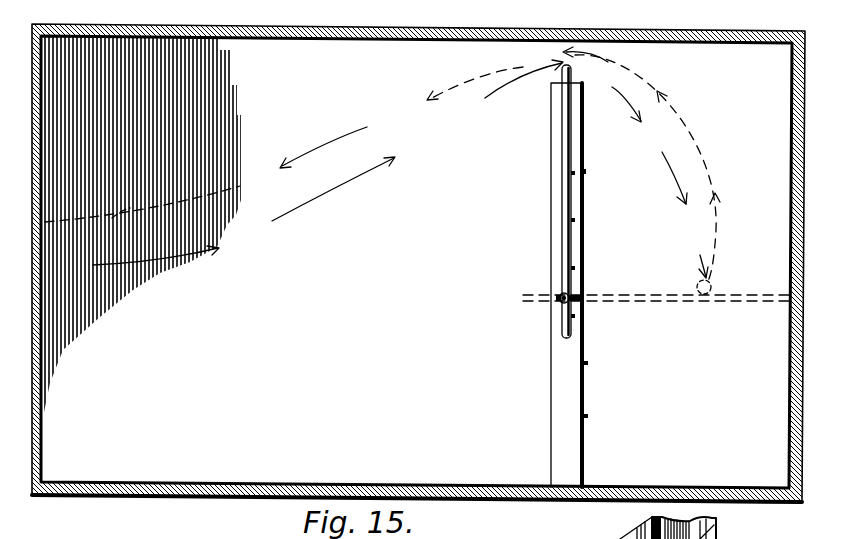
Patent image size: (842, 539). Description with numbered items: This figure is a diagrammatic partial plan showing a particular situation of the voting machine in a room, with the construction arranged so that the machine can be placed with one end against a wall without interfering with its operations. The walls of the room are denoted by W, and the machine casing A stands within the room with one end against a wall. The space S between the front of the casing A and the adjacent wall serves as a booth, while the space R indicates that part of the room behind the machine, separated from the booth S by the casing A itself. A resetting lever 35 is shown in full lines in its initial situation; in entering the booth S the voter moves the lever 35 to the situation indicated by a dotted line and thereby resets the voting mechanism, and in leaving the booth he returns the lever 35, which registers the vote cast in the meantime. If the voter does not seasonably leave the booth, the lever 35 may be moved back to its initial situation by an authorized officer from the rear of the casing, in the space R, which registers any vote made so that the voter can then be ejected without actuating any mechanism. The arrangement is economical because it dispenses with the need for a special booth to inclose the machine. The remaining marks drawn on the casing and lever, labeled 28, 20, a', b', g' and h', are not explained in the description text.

The walls of a room W is at (418, 263).
The part of the room behind the machine R is at (202, 227).
The guide channel 28 is at (550, 127).
The machine casing A is at (594, 285).
The resetting lever 35 is at (575, 147).
The slat 20 is at (584, 171).
The lug b' is at (594, 212).
The lug a' is at (592, 285).
The stop h' is at (598, 356).
The stop g' is at (602, 412).
The booth space S is at (647, 174).